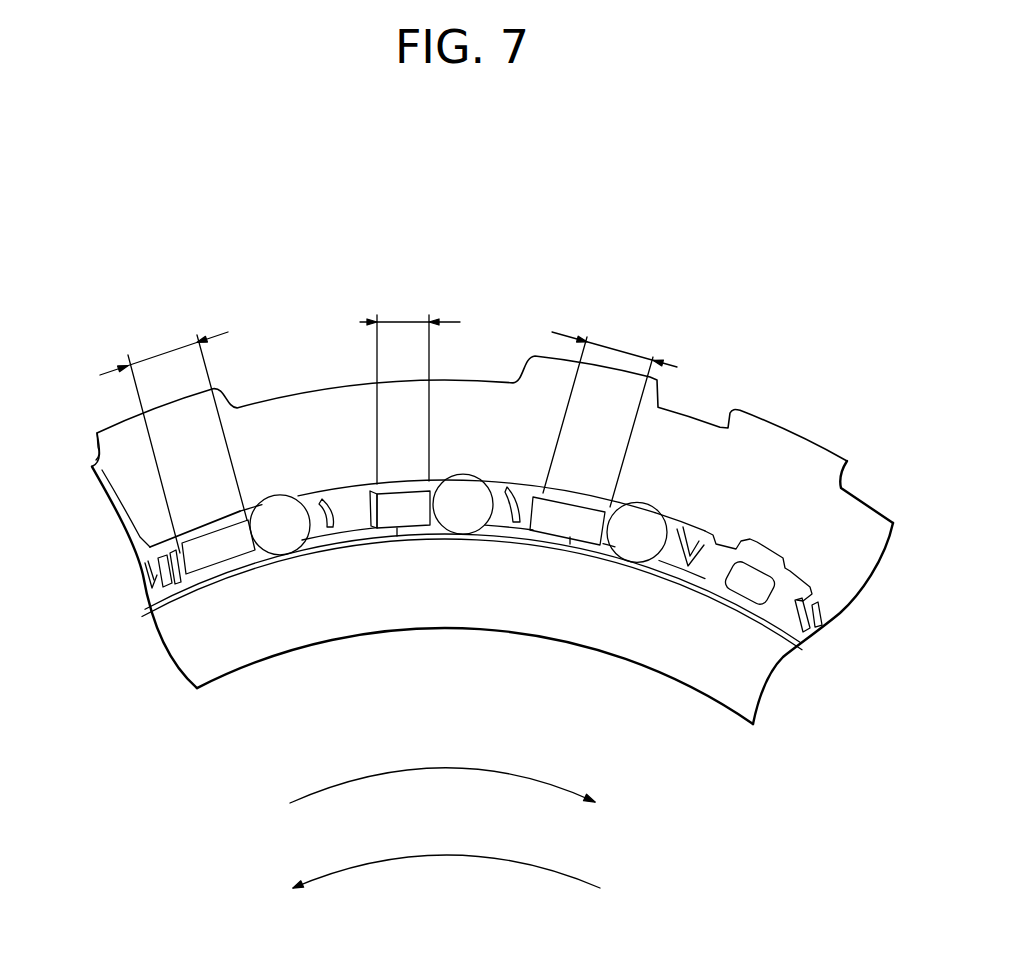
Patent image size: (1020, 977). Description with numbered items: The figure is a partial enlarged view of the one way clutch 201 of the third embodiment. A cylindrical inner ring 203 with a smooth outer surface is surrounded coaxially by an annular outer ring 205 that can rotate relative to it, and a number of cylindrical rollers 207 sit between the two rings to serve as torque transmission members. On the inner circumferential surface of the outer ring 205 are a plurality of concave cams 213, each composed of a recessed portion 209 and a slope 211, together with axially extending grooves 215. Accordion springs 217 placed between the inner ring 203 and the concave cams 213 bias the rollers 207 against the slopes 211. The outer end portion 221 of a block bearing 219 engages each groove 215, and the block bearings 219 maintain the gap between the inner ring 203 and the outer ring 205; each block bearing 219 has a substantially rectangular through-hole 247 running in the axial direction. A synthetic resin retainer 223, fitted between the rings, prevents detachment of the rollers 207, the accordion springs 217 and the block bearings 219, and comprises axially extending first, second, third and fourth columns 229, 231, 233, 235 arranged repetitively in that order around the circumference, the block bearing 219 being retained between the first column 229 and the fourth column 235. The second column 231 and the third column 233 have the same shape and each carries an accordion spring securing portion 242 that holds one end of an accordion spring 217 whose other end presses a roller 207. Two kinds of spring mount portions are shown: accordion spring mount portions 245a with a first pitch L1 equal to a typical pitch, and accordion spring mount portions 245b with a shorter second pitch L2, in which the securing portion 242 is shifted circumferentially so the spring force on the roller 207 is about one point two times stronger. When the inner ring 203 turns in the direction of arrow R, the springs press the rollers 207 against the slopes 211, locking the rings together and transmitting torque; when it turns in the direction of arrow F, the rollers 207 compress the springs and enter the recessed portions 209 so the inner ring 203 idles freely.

The one way clutch 201 is at (664, 196).
The inner ring 203 is at (187, 640).
The outer ring 205 is at (674, 432).
The roller 207 is at (276, 520).
The recessed portion 209 is at (442, 475).
The slope 211 is at (470, 474).
The concave cam 213 is at (452, 473).
The groove 215 is at (773, 548).
The accordion spring 217 is at (210, 557).
The block bearing 219 is at (710, 577).
The outer end portion 221 is at (753, 547).
The retainer 223 is at (165, 594).
The first column 229 is at (101, 461).
The second column 231 is at (337, 522).
The third column 233 is at (507, 486).
The fourth column 235 is at (700, 545).
The accordion spring securing portion 242 is at (182, 590).
The through-hole 247 is at (752, 584).
The accordion spring mount portion 245a is at (388, 435).
The accordion spring mount portion 245b is at (410, 385).
The first pitch L1 is at (342, 353).
The second pitch L2 is at (358, 340).
The inner ring locking direction R is at (459, 795).
The inner ring idling direction F is at (432, 884).